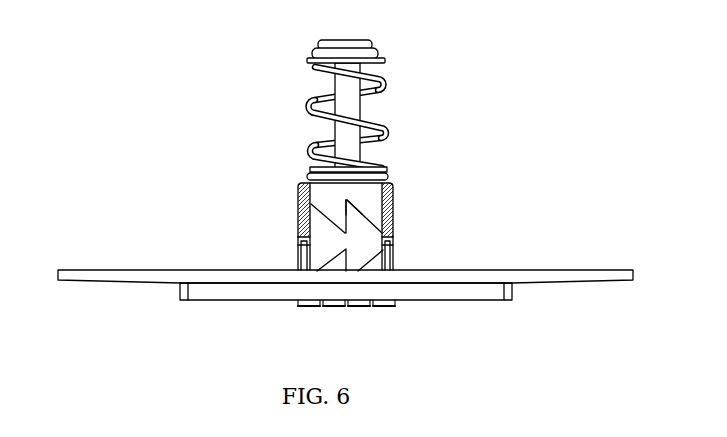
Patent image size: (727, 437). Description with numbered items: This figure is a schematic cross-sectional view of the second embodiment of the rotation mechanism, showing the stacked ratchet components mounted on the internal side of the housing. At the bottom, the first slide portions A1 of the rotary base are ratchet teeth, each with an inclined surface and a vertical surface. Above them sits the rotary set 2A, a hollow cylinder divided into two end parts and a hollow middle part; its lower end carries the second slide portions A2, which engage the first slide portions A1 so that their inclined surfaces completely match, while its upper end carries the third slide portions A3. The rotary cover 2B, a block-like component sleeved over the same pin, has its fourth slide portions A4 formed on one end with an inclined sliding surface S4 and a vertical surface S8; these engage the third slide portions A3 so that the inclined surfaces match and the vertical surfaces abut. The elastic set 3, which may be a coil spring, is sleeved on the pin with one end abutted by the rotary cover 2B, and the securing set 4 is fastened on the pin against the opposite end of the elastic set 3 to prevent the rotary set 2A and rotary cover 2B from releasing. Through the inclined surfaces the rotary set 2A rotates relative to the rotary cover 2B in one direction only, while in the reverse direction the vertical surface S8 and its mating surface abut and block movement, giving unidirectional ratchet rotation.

The securing set 4 is at (392, 51).
The elastic set 3 is at (392, 82).
The inclined sliding surface S4 is at (367, 198).
The vertical surface S8 is at (342, 196).
The rotary cover 2B is at (406, 193).
The rotary set 2A is at (383, 267).
The first slide portion A1 is at (325, 256).
The second slide portion A2 is at (367, 261).
The third slide portion A3 is at (367, 222).
The fourth slide portion A4 is at (327, 208).